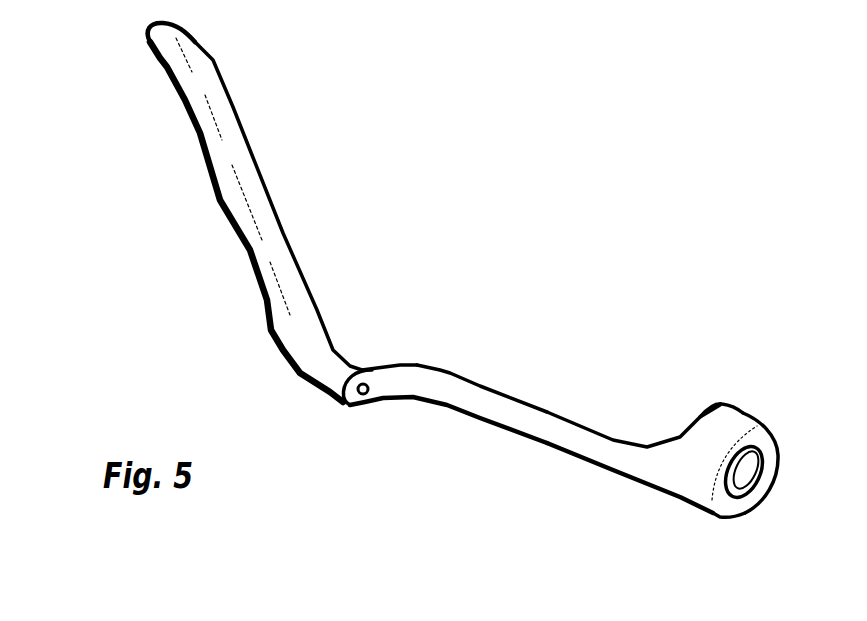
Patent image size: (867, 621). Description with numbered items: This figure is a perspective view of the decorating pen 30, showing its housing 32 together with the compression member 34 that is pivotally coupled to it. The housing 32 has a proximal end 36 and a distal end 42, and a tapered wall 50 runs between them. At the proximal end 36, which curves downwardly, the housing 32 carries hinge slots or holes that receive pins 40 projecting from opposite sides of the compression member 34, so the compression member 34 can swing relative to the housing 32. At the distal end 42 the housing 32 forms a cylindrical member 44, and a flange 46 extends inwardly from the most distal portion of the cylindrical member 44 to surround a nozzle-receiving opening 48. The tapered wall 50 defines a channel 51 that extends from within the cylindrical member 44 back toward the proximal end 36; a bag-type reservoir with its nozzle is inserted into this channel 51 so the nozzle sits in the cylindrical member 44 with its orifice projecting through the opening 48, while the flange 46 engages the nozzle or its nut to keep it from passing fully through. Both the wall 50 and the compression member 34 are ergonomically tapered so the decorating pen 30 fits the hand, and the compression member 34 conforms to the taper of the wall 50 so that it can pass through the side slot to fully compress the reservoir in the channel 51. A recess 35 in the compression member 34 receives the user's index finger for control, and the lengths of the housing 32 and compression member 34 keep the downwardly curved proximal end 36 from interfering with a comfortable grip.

The decorating pen 30 is at (444, 447).
The housing 32 is at (502, 410).
The compression member 34 is at (237, 110).
The recess 35 is at (168, 63).
The proximal end 36 is at (373, 369).
The pins 40 is at (350, 402).
The distal end 42 is at (676, 386).
The cylindrical member 44 is at (725, 411).
The flange 46 is at (737, 510).
The nozzle-receiving opening 48 is at (747, 463).
The tapered wall 50 is at (618, 458).
The channel 51 is at (564, 386).